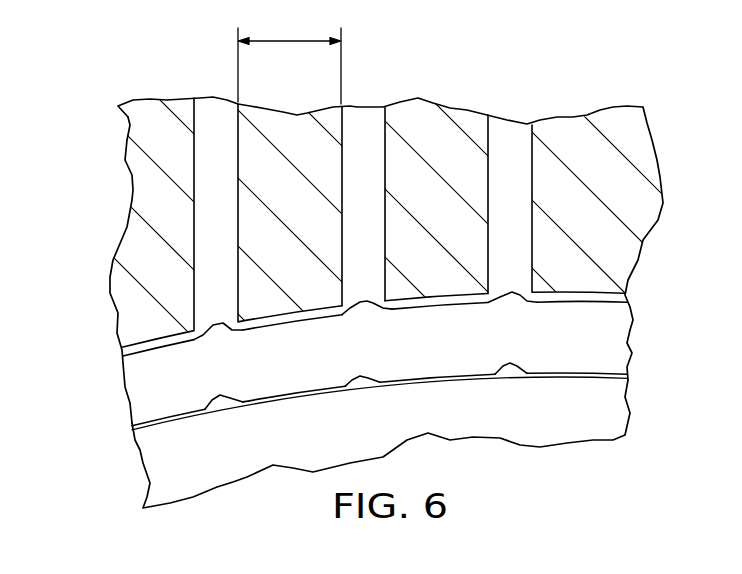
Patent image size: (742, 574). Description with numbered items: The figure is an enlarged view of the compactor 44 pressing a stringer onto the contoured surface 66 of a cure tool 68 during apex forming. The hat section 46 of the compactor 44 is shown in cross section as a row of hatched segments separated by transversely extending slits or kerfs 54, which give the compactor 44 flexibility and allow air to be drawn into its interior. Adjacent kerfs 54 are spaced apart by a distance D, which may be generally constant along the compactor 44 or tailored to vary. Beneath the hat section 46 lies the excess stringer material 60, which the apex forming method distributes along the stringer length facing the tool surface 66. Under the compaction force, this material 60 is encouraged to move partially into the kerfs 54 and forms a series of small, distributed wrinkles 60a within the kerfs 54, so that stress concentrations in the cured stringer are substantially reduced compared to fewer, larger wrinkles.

The compactor 44 is at (280, 122).
The hat section 46 is at (616, 100).
The kerfs 54 is at (342, 128).
The excess stringer material 60 is at (146, 385).
The wrinkles 60a is at (218, 396).
The contoured surface 66 is at (306, 389).
The cure tool 68 is at (138, 465).
The distance between kerfs D is at (289, 58).